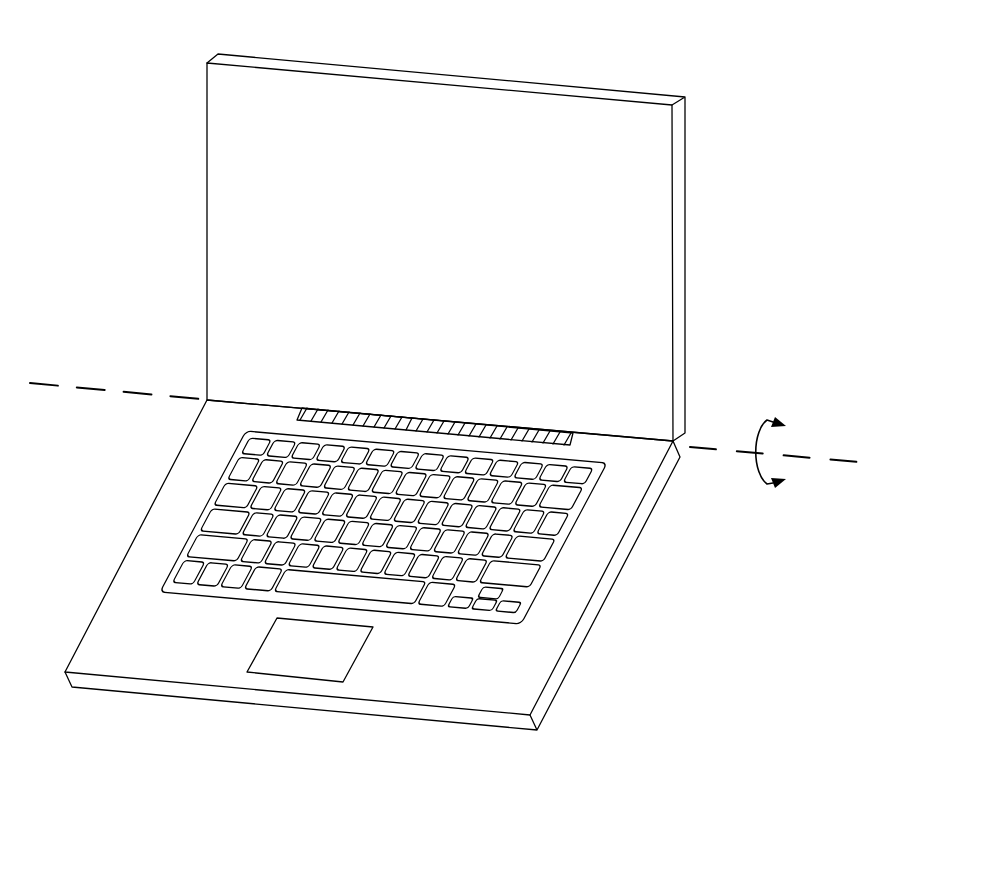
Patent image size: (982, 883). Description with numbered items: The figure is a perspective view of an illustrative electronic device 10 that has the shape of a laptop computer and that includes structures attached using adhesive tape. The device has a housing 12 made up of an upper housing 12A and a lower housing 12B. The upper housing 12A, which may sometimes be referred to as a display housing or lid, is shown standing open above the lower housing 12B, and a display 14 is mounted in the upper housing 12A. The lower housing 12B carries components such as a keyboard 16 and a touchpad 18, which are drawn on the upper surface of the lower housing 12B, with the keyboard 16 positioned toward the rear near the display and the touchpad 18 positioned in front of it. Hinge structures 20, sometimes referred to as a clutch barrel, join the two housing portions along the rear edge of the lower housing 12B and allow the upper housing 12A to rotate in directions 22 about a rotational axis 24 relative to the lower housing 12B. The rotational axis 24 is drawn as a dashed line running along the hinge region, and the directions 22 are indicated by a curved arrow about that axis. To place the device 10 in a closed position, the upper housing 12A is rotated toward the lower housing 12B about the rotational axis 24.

The electronic device 10 is at (745, 64).
The housing 12 is at (687, 373).
The upper housing 12A is at (193, 63).
The lower housing 12B is at (188, 403).
The display 14 is at (592, 240).
The keyboard 16 is at (532, 545).
The touchpad 18 is at (358, 662).
The hinge structures 20 is at (545, 431).
The directions 22 is at (757, 487).
The rotational axis 24 is at (90, 390).